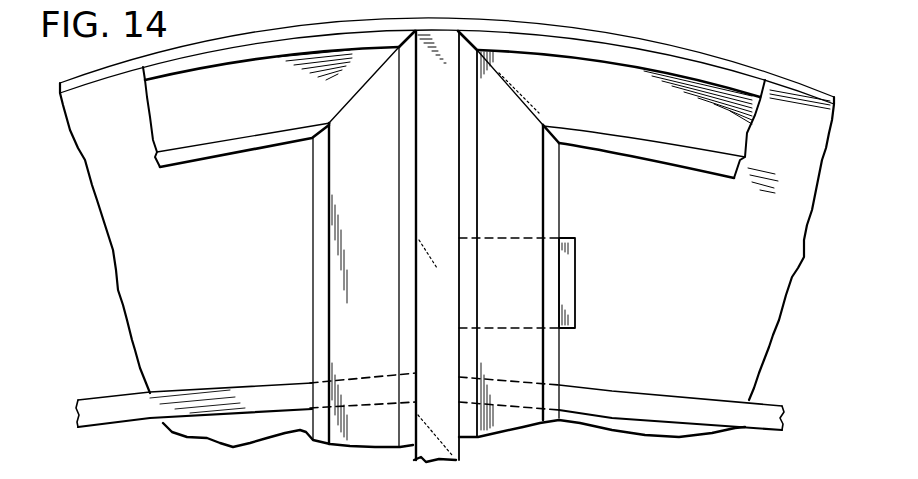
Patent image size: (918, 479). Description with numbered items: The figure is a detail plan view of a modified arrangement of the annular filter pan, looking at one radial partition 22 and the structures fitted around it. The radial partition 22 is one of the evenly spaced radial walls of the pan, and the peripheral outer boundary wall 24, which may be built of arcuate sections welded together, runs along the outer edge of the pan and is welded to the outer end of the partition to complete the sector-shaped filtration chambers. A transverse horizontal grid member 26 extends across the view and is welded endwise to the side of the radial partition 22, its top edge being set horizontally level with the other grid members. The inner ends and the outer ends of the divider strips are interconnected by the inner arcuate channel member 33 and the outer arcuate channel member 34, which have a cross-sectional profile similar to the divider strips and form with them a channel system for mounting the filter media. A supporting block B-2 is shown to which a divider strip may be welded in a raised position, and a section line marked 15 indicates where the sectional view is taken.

The peripheral outer boundary wall 24 is at (210, 44).
The radial partition 22 is at (428, 160).
The transverse horizontal grid member 26 is at (652, 404).
The inner arcuate channel member 33 is at (267, 101).
The outer arcuate channel member 34 is at (627, 109).
The supporting block B-2 is at (566, 268).
The section line 15- 15 is at (667, 446).